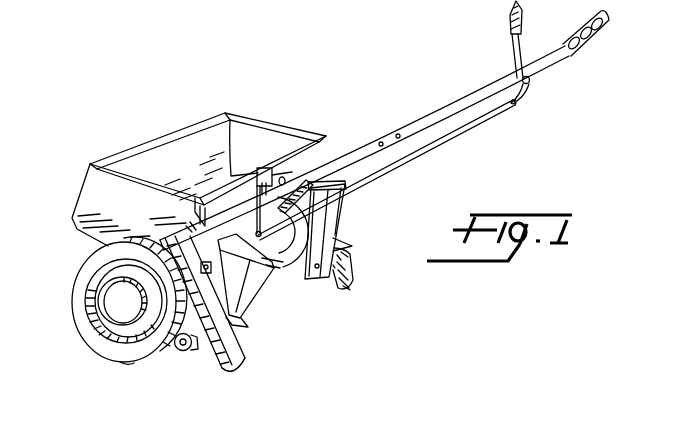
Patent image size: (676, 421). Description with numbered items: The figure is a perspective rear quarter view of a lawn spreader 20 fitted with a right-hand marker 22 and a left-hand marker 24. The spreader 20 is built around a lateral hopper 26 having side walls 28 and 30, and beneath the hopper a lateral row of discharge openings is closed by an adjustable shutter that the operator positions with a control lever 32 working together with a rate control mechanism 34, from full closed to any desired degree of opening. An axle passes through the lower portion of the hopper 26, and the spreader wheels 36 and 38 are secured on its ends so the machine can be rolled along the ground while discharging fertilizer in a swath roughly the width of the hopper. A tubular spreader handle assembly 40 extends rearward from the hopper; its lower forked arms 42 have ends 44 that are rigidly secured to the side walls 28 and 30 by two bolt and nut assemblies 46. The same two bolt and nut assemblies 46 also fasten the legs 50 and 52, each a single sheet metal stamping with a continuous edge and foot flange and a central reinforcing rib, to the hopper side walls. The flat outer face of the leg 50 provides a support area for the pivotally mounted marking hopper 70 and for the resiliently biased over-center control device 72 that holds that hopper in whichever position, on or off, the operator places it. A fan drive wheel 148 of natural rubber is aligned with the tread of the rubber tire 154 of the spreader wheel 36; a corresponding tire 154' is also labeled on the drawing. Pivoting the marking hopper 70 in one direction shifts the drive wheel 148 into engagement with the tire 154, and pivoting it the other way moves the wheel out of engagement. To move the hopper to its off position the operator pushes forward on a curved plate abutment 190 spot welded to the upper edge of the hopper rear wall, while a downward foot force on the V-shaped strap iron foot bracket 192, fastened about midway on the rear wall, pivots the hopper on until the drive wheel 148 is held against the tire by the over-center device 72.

The lawn spreader 20 is at (278, 117).
The right-hand marker 22 is at (361, 208).
The left-hand marker 24 is at (254, 297).
The lateral hopper 26 is at (164, 153).
The side wall 28 is at (92, 198).
The side wall 30 is at (251, 133).
The control lever 32 is at (512, 49).
The rate control mechanism 34 is at (268, 170).
The spreader wheel 36 is at (108, 276).
The spreader wheel 38 is at (338, 240).
The tubular spreader handle assembly 40 is at (364, 146).
The lower forked arms 42 is at (200, 206).
The ends 44 is at (194, 231).
The bolt and nut assemblies 46 is at (165, 242).
The leg 50 is at (354, 280).
The leg 52 is at (241, 369).
The marking hopper 70 is at (318, 269).
The over-center control device 72 is at (211, 268).
The fan drive wheel 148 is at (186, 354).
The rubber tire 154 is at (285, 249).
The tire 154' is at (141, 375).
The curved plate abutment 190 is at (350, 184).
The foot bracket 192 is at (354, 247).